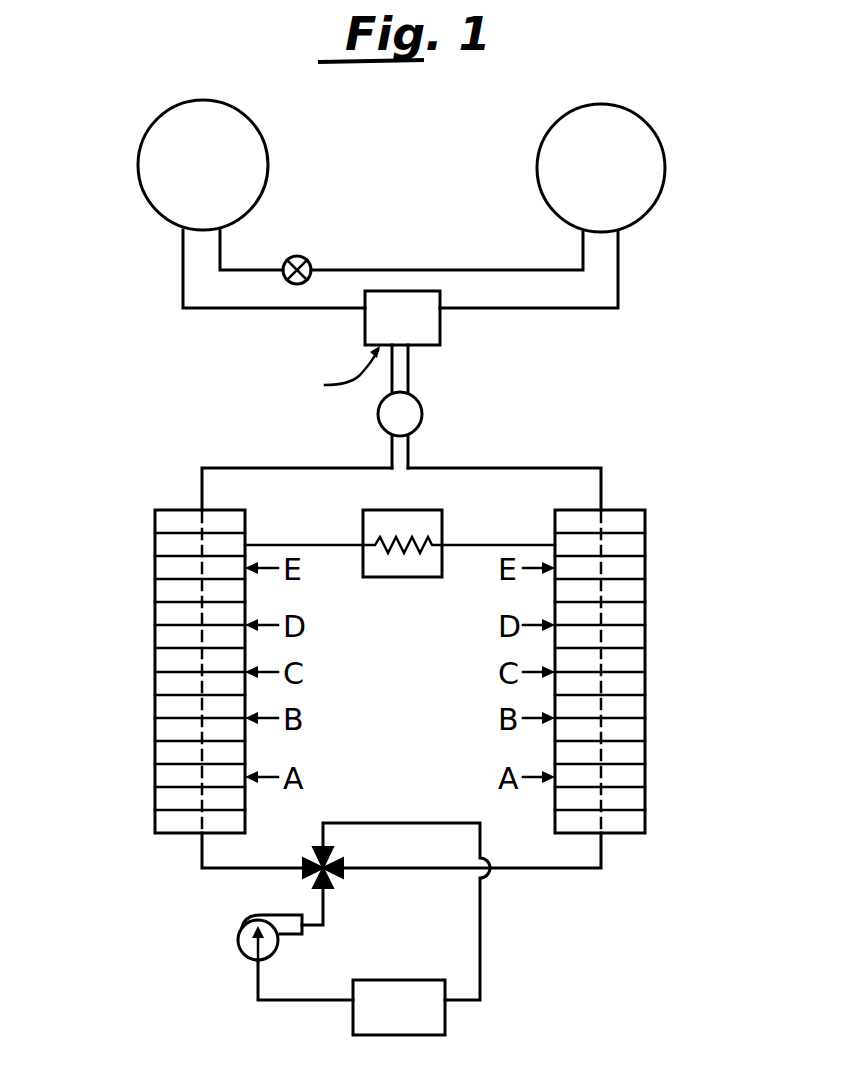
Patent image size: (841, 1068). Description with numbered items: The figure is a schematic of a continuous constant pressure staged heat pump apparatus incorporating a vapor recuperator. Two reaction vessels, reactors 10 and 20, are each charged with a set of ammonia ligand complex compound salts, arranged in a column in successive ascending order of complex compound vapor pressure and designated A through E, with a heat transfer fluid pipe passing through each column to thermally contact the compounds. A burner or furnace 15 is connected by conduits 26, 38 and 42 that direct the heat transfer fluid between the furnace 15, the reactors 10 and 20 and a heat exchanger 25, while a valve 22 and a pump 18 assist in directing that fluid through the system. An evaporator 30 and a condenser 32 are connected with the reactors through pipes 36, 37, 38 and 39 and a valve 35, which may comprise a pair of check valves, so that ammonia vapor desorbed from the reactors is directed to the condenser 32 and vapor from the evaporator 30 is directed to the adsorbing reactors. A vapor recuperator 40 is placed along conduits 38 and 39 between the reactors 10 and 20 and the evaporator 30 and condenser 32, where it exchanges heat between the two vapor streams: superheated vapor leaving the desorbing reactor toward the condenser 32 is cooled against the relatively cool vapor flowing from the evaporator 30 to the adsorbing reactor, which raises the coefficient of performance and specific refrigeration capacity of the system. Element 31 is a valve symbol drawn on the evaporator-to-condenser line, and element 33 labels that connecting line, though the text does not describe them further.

The reactor 10 is at (645, 545).
The furnace 15 is at (445, 1025).
The pump 18 is at (237, 940).
The reactor 20 is at (155, 545).
The valve 22 is at (338, 878).
The heat exchanger 25 is at (385, 577).
The conduit 26 is at (601, 850).
The evaporator 30 is at (153, 130).
The expansion valve 31 is at (297, 256).
The condenser 32 is at (664, 153).
The refrigerant line 33 is at (431, 270).
The valve 35 is at (423, 414).
The pipe 36 is at (570, 468).
The pipe 37 is at (295, 468).
The conduit 38 is at (250, 308).
The conduit 39 is at (575, 310).
The vapor recuperator 40 is at (440, 325).
The conduit 42 is at (200, 850).